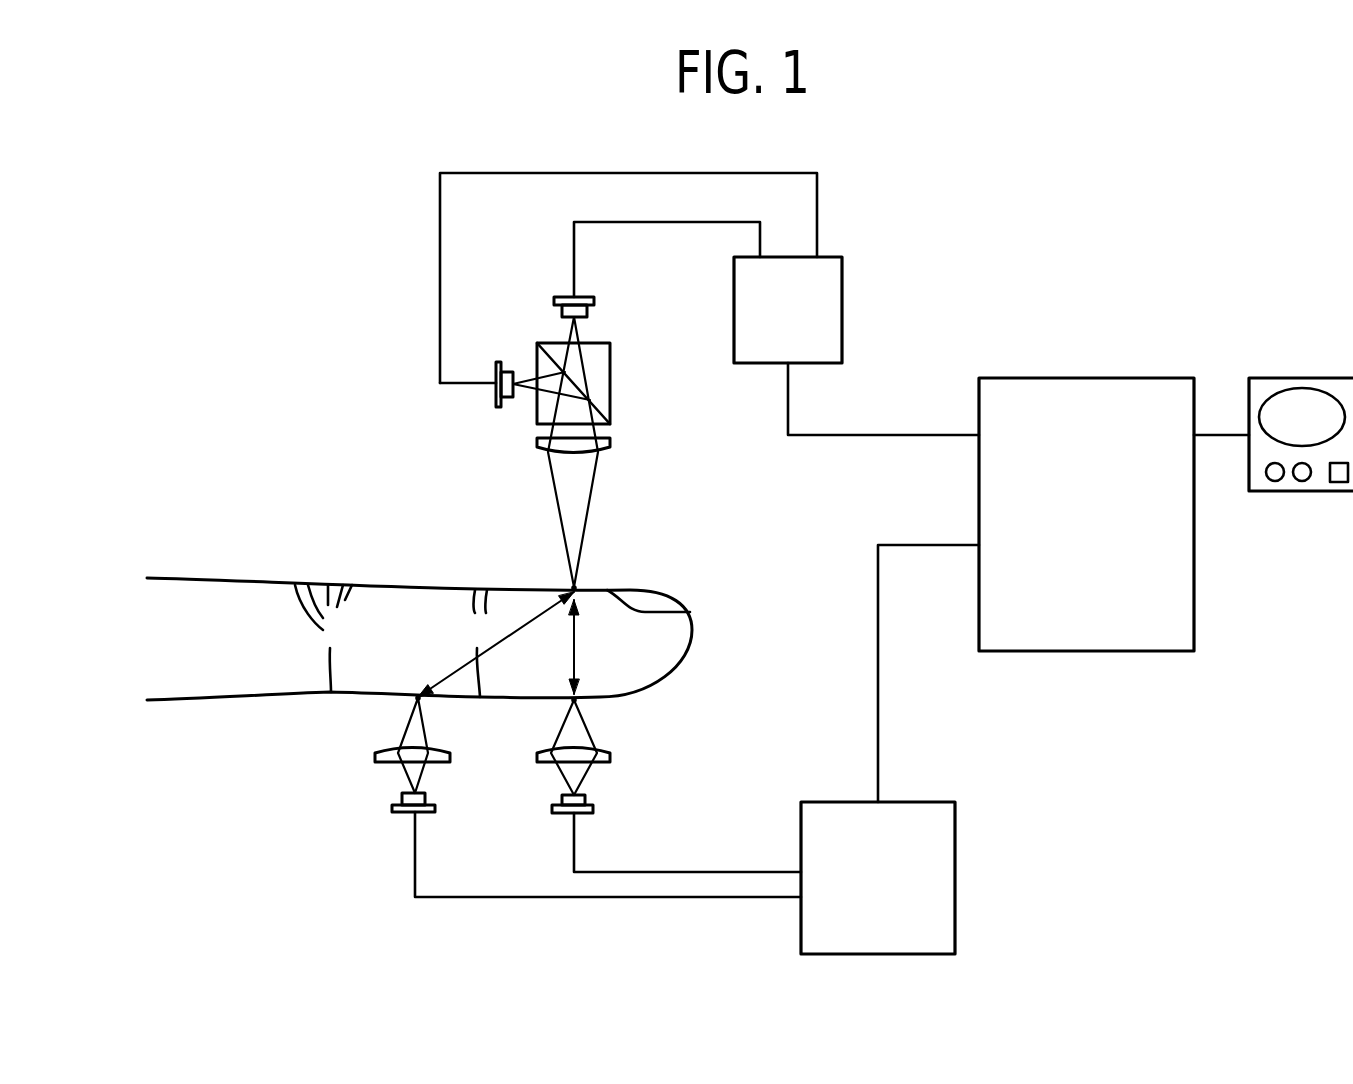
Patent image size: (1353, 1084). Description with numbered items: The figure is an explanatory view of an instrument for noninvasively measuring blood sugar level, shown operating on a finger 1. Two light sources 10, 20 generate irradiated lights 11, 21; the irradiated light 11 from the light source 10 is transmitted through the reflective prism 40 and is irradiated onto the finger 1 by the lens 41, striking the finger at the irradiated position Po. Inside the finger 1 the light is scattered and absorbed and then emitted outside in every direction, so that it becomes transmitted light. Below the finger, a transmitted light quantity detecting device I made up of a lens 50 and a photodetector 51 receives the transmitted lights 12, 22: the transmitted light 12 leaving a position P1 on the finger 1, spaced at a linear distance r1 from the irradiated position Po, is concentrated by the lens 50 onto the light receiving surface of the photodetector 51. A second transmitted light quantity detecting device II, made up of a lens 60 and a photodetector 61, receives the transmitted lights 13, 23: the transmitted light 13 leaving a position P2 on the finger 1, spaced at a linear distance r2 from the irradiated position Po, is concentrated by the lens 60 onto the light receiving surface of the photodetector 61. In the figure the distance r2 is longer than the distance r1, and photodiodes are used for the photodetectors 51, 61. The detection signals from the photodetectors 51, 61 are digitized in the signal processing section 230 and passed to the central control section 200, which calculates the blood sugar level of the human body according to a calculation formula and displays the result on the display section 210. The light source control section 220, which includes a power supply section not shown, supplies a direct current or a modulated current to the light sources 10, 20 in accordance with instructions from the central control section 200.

The finger 1 is at (206, 603).
The light source 10 is at (584, 298).
The light source 20 is at (495, 398).
The reflective prism 40 is at (610, 373).
The lens 41 is at (610, 442).
The irradiated light 11 is at (497, 452).
The irradiated light 21 is at (552, 513).
The transmitted light 12 is at (515, 788).
The transmitted light 22 is at (557, 778).
The transmitted light 13 is at (320, 748).
The transmitted light 23 is at (390, 780).
The lens 50 is at (610, 755).
The photodetector 51 is at (593, 808).
The lens 60 is at (375, 749).
The photodetector 61 is at (392, 808).
The central control section 200 is at (1094, 378).
The display section 210 is at (1302, 378).
The light source control section 220 is at (835, 257).
The signal processing section 230 is at (955, 872).
The irradiated position Po is at (583, 580).
The position P1 is at (587, 707).
The position P2 is at (423, 707).
The linear distance r1 is at (558, 647).
The linear distance r2 is at (496, 644).
The transmitted light quantity detecting device I is at (718, 737).
The transmitted light quantity detecting device II is at (215, 723).